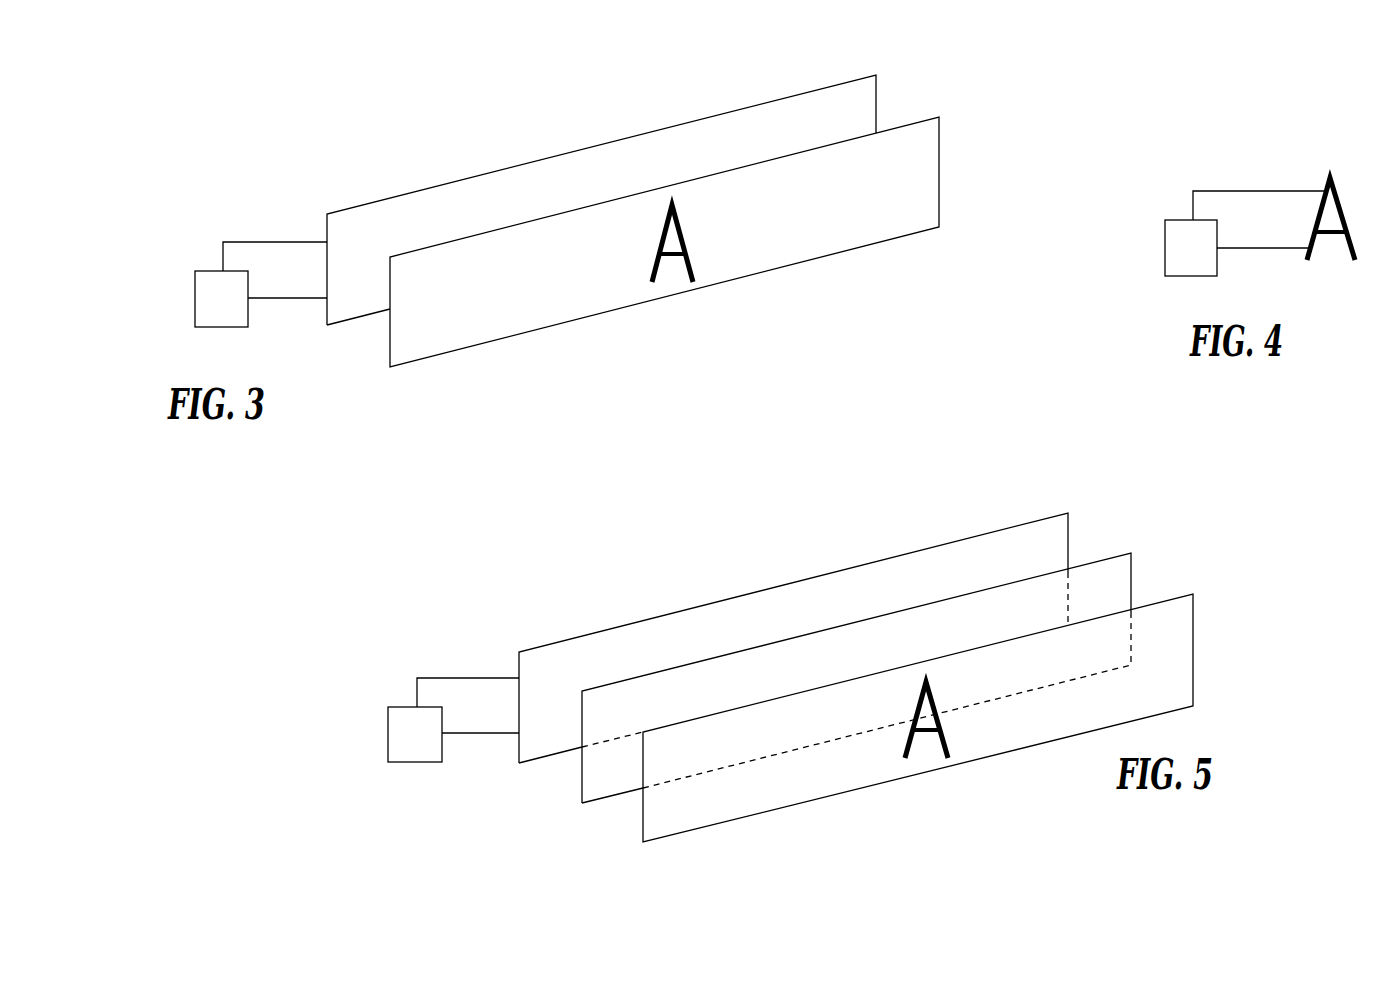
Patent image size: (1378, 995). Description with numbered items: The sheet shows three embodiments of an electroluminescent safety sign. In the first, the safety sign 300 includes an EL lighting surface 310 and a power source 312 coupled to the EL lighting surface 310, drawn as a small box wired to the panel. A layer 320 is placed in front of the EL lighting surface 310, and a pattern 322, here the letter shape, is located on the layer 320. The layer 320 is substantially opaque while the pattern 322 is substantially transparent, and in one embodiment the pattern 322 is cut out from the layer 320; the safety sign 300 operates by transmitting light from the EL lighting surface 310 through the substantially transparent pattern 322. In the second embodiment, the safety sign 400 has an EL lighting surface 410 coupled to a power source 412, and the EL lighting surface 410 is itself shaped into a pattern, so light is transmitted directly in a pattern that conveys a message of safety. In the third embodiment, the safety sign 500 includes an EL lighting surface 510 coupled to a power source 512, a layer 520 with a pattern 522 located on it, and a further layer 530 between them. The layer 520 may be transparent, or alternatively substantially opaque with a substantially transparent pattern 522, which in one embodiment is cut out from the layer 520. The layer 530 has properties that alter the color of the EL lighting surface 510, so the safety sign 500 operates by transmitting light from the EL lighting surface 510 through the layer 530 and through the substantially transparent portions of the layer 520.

In FIG. 3, the safety sign 300 is at (257, 56).
In FIG. 3, the EL lighting surface 310 is at (870, 97).
In FIG. 3, the power source 312 is at (210, 310).
In FIG. 3, the layer 320 is at (933, 168).
In FIG. 3, the pattern 322 is at (697, 258).
In FIG. 4, the safety sign 400 is at (1152, 135).
In FIG. 4, the EL lighting surface 410 is at (1328, 182).
In FIG. 4, the power source 412 is at (1180, 258).
In FIG. 5, the safety sign 500 is at (448, 492).
In FIG. 5, the EL lighting surface 510 is at (1062, 533).
In FIG. 5, the power source 512 is at (402, 745).
In FIG. 5, the layer 520 is at (1187, 645).
In FIG. 5, the pattern 522 is at (947, 735).
In FIG. 5, the layer 530 is at (1123, 575).